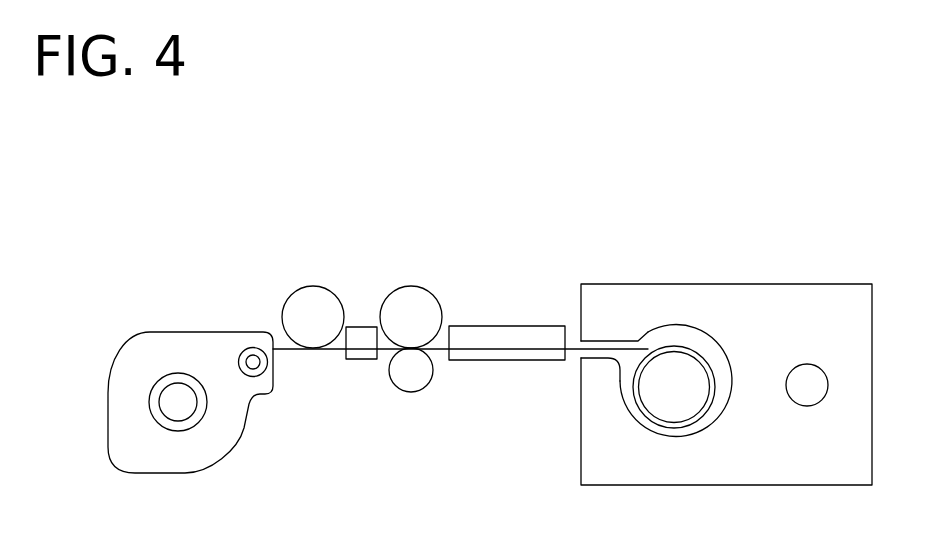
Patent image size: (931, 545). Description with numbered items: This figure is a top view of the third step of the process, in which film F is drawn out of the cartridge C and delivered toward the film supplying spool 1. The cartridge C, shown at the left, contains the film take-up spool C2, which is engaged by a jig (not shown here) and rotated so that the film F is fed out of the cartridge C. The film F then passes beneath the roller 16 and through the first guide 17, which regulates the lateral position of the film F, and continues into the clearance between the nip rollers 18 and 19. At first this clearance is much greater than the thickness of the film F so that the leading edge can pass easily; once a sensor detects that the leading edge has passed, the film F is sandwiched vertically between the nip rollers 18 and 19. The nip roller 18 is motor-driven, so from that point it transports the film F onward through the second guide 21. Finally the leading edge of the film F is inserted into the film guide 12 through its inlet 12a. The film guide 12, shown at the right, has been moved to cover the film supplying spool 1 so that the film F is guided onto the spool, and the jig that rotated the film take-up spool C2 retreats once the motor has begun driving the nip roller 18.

The cartridge C is at (182, 331).
The film take-up spool C2 is at (178, 395).
The roller 16 is at (313, 286).
The first guide 17 is at (361, 327).
The nip roller 18 is at (416, 286).
The nip roller 19 is at (410, 393).
The second guide 21 is at (503, 326).
The film F is at (613, 348).
The film guide 12 is at (782, 284).
The inlet 12a is at (577, 342).
The film supplying spool 1 is at (673, 365).